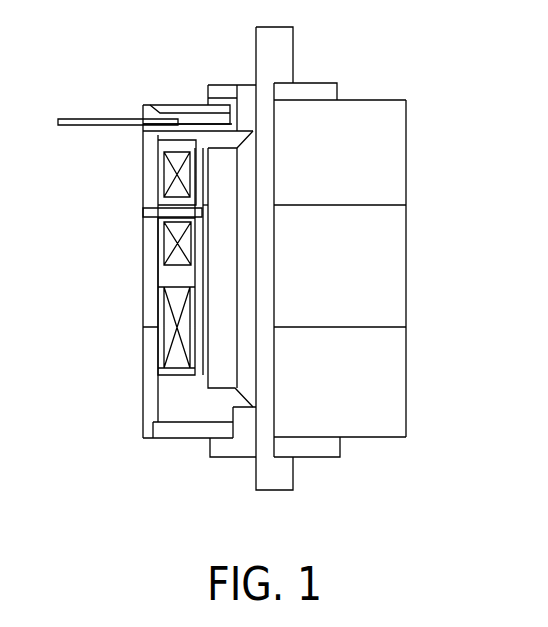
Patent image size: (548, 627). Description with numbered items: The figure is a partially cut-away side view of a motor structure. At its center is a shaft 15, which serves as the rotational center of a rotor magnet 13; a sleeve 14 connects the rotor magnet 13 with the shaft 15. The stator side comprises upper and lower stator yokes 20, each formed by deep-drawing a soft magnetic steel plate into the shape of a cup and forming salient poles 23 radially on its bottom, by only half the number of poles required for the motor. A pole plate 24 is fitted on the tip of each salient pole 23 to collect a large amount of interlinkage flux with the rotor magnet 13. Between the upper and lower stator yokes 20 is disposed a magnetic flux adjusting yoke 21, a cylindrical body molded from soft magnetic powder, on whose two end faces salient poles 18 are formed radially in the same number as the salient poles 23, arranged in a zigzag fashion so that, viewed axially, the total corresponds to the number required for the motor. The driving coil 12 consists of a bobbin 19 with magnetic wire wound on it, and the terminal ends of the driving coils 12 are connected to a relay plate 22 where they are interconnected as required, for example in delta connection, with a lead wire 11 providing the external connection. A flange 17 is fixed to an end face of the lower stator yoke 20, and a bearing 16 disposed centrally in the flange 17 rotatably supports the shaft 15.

The lead wire 11 is at (72, 110).
The driving coil 12 is at (165, 243).
The rotor magnet 13 is at (223, 337).
The sleeve 14 is at (250, 386).
The shaft 15 is at (270, 470).
The bearing 16 is at (327, 445).
The flange 17 is at (173, 430).
The salient pole 18 is at (180, 213).
The bobbin 19 is at (158, 175).
The stator yoke 20 is at (395, 380).
The magnetic flux adjusting yoke 21 is at (395, 270).
The relay plate 22 is at (180, 122).
The salient pole 23 is at (160, 213).
The pole plate 24 is at (195, 247).